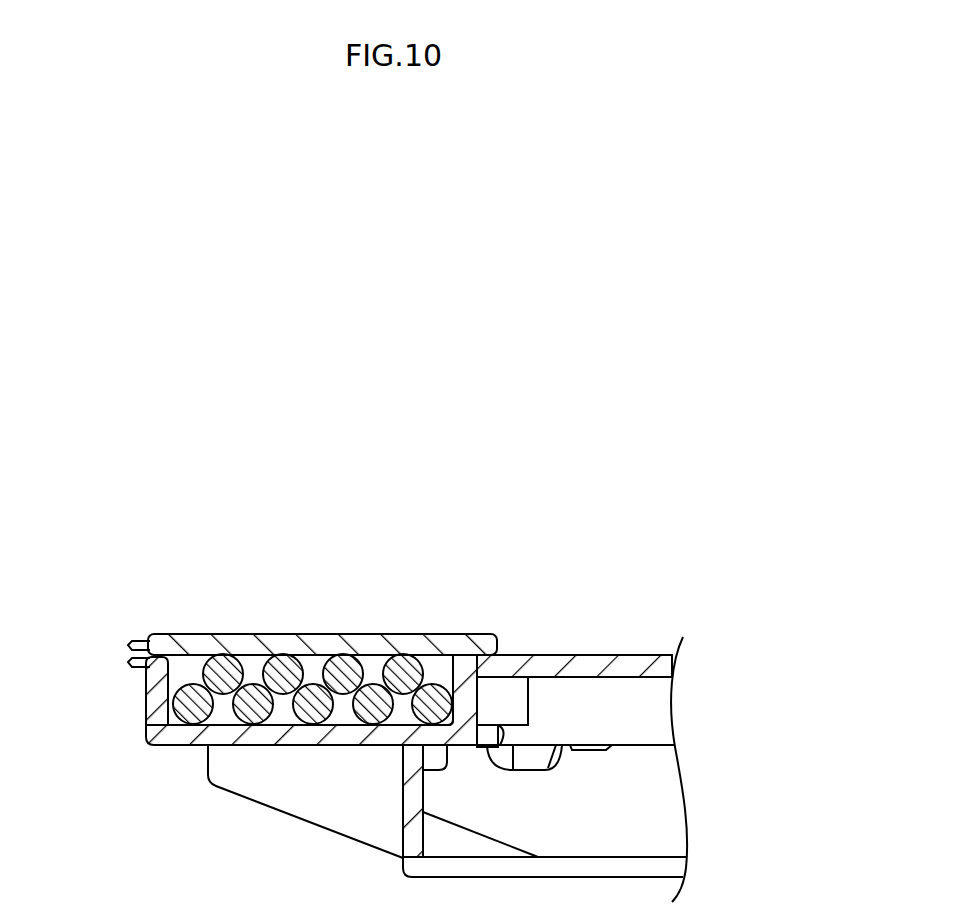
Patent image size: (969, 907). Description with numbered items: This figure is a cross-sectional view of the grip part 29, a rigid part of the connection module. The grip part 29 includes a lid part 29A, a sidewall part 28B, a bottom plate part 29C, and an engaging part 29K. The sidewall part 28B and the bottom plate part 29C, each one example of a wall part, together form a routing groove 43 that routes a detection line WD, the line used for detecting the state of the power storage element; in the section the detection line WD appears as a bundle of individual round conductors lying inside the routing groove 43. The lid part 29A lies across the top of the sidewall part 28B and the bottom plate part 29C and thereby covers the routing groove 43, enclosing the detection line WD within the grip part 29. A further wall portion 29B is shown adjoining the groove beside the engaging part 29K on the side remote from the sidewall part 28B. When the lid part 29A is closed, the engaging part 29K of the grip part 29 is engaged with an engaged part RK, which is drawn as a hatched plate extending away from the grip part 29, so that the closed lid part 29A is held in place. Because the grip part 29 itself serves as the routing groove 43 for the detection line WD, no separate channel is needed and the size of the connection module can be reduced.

The grip part 29 is at (130, 612).
The lid part 29A is at (280, 634).
The cassette side wall 29B is at (515, 689).
The bottom plate part 29C is at (283, 742).
The engaging part 29K is at (532, 728).
The sidewall part 28B is at (145, 712).
The routing groove 43 is at (439, 658).
The detection line WD is at (222, 658).
The engaged part RK is at (535, 675).